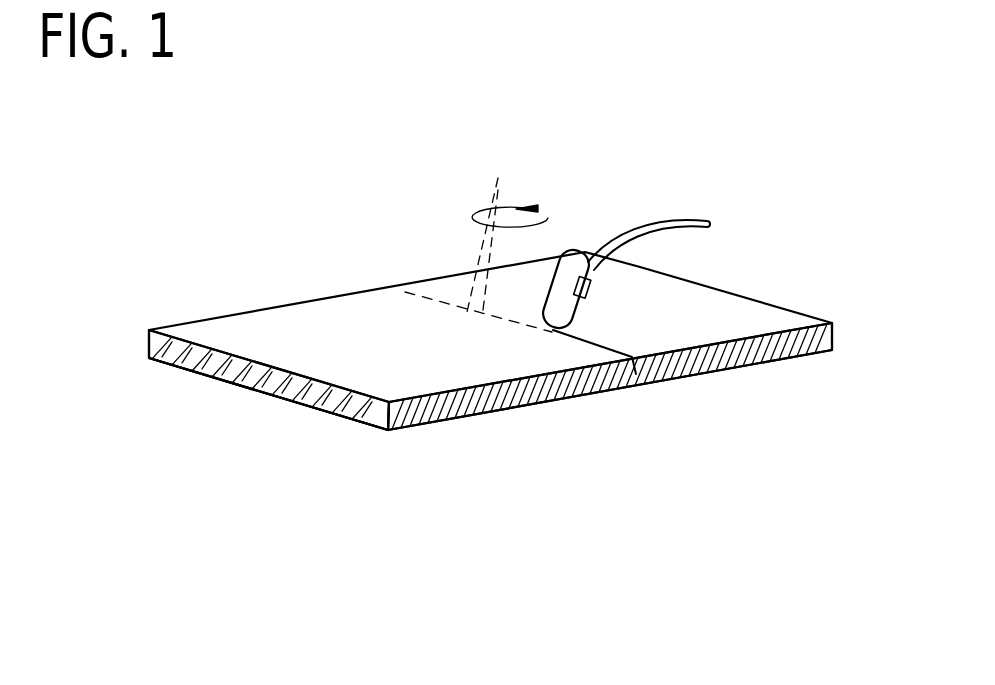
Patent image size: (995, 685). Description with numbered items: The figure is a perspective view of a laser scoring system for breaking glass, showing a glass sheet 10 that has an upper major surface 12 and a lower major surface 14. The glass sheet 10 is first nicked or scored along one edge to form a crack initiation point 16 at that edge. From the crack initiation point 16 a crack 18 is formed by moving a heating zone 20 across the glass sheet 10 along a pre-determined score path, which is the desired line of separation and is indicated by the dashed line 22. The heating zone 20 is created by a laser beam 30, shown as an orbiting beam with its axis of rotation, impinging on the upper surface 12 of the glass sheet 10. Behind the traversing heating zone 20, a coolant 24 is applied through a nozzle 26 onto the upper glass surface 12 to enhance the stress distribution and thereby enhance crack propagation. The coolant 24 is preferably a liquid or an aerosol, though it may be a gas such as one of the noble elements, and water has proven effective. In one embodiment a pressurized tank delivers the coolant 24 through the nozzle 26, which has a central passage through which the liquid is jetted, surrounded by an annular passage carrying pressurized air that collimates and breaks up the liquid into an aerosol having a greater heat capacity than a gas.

The glass sheet 10 is at (728, 368).
The upper major surface 12 is at (278, 350).
The lower major surface 14 is at (333, 413).
The crack initiation point 16 is at (636, 363).
The crack 18 is at (615, 355).
The heating zone 20 is at (492, 320).
The dashed line (score path) 22 is at (428, 298).
The coolant 24 is at (563, 252).
The nozzle 26 is at (582, 303).
The laser beam 30 is at (480, 243).